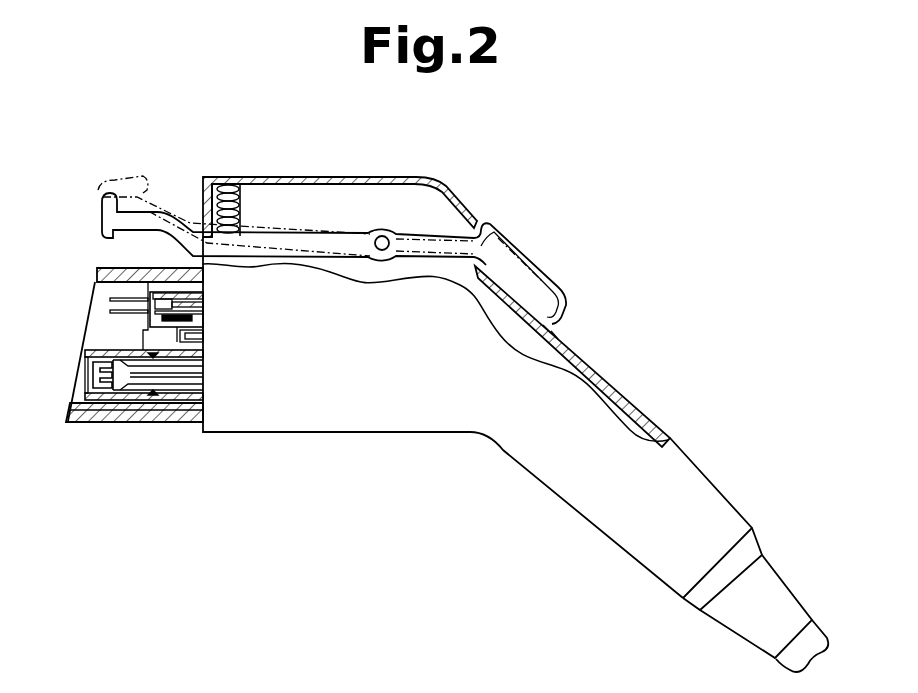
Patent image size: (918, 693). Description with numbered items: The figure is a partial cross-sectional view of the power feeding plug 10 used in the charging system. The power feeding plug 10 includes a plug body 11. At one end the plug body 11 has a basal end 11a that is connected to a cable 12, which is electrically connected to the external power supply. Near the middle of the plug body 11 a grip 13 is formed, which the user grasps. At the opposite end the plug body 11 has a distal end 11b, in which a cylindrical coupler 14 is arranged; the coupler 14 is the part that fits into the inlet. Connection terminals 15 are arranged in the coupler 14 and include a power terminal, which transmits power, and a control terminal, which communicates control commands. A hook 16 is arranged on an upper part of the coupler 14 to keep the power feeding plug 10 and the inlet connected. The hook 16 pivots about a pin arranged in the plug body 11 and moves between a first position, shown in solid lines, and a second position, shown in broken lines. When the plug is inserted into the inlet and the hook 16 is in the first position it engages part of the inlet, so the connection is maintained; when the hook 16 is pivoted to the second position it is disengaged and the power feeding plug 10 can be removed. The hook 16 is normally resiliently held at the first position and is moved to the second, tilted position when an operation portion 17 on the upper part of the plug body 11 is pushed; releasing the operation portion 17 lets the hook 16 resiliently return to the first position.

The power feeding plug 10 is at (703, 170).
The plug body 11 is at (424, 158).
The basal end 11a is at (717, 485).
The distal end 11b is at (229, 177).
The cable 12 is at (780, 667).
The grip 13 is at (648, 410).
The coupler 14 is at (112, 268).
The connection terminals 15 is at (108, 313).
The hook 16 is at (120, 191).
The operation portion 17 is at (541, 252).